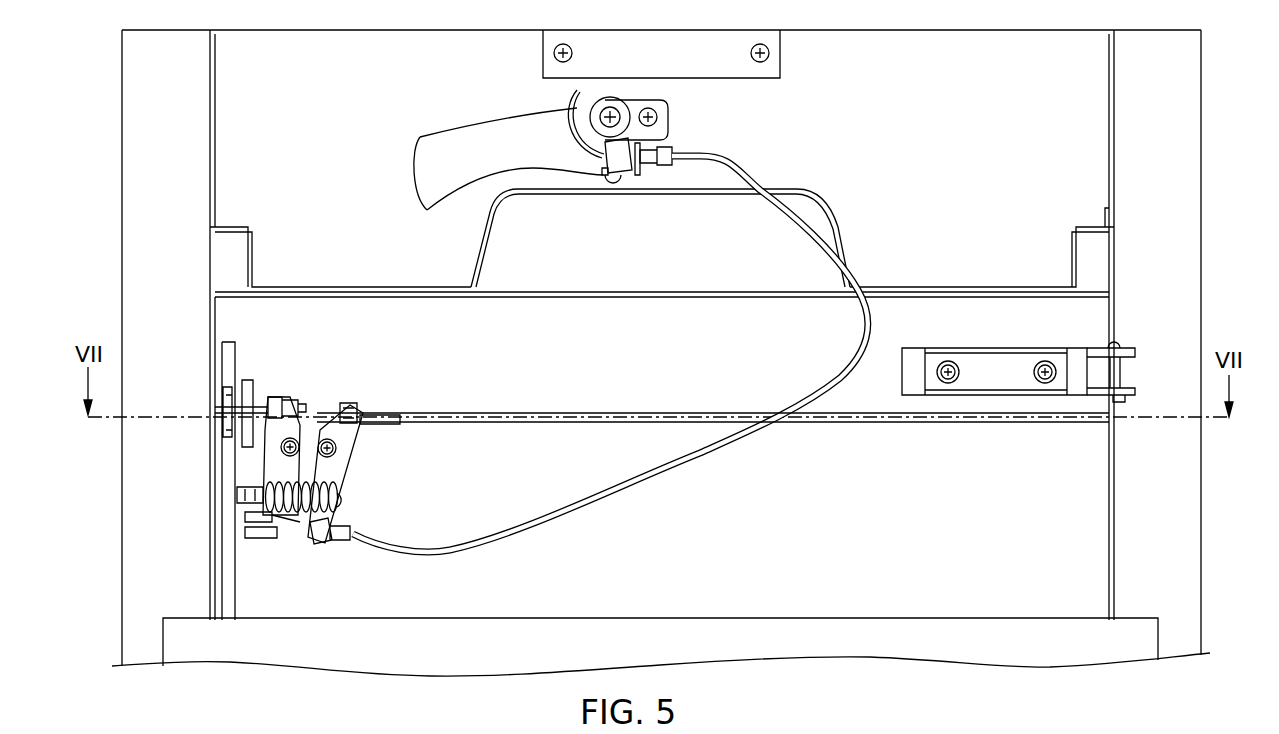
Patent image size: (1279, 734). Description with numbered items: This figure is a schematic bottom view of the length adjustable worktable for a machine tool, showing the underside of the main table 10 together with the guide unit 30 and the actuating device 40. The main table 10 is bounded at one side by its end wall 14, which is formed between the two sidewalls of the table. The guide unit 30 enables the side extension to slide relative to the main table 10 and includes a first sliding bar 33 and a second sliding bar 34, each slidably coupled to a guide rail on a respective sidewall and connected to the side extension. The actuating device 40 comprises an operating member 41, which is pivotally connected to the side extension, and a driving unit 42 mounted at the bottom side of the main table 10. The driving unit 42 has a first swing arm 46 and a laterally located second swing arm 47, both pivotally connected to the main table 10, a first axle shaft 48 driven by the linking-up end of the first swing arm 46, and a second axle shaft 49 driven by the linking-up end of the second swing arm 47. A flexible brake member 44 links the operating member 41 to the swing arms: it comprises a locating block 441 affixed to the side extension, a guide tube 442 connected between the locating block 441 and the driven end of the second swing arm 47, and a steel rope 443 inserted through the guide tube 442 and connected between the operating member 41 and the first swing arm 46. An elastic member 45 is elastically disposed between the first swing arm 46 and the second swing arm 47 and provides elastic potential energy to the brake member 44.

The main table 10 is at (1085, 578).
The end wall 14 is at (235, 295).
The guide unit 30 is at (1202, 337).
The first sliding bar 33 is at (128, 445).
The second sliding bar 34 is at (1183, 518).
The actuating device 40 is at (485, 124).
The operating member 41 is at (438, 152).
The driving unit 42 is at (264, 458).
The flexible brake member 44 is at (742, 177).
The locating block 441 is at (638, 176).
The guide tube 442 is at (782, 203).
The steel rope 443 is at (298, 546).
The elastic member 45 is at (293, 517).
The first swing arm 46 is at (250, 480).
The second swing arm 47 is at (347, 472).
The first axle shaft 48 is at (302, 404).
The second axle shaft 49 is at (560, 413).